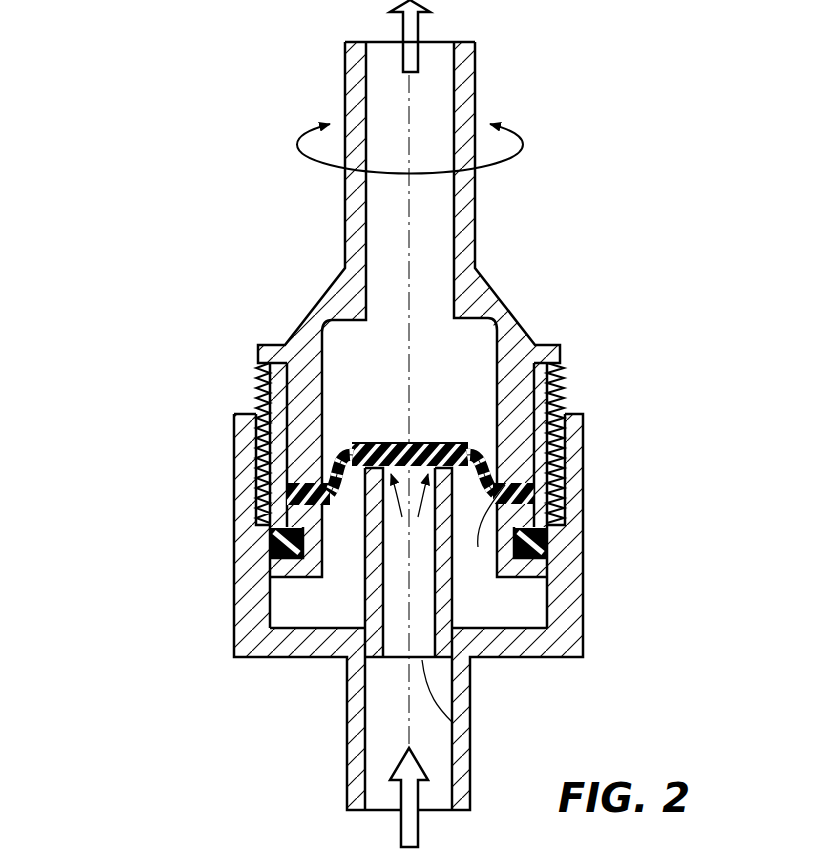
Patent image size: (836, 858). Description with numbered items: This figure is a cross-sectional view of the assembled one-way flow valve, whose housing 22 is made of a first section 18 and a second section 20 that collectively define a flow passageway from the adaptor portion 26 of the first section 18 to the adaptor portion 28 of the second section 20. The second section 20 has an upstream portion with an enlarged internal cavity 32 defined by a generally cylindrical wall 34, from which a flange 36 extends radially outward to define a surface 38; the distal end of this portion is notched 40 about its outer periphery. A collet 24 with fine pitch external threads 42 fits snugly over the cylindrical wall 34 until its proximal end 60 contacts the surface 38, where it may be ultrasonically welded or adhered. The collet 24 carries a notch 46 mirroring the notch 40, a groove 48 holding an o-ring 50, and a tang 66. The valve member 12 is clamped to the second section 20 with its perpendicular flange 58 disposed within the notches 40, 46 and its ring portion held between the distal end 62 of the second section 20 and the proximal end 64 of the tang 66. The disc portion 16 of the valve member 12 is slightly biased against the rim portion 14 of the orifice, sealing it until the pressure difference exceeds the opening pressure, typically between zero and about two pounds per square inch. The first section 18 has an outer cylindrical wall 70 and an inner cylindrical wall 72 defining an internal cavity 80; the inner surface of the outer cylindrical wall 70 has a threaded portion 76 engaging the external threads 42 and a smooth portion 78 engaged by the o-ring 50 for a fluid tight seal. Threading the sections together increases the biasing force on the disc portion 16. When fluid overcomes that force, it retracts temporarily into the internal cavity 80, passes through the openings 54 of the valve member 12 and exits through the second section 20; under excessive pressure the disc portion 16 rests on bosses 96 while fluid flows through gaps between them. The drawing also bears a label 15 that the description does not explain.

The valve member 12 is at (383, 432).
The rim portion 14 is at (478, 442).
The inlet passage 15 is at (452, 722).
The disc portion 16 is at (350, 435).
The first section 18 is at (610, 627).
The second section 20 is at (606, 127).
The housing 22 is at (127, 45).
The collet 24 is at (590, 370).
The adaptor portion 26 is at (215, 658).
The adaptor portion 28 is at (277, 44).
The internal cavity 32 is at (500, 297).
The cylindrical wall 34 is at (562, 396).
The flange 36 is at (556, 352).
The surface 38 is at (542, 347).
The notch 40 is at (331, 450).
The external threads 42 is at (256, 372).
The notch 46 is at (337, 510).
The groove 48 is at (547, 590).
The o-ring 50 is at (552, 540).
The openings 54 is at (330, 476).
The flange 58 is at (545, 491).
The proximal end 60 is at (562, 366).
The distal end 62 is at (563, 458).
The proximal end 64 is at (478, 547).
The tang 66 is at (560, 657).
The outer cylindrical wall 70 is at (565, 557).
The inner cylindrical wall 72 is at (443, 598).
The threaded portion 76 is at (215, 415).
The smooth portion 78 is at (215, 657).
The internal cavity 80 is at (347, 497).
The boss 96 is at (350, 300).